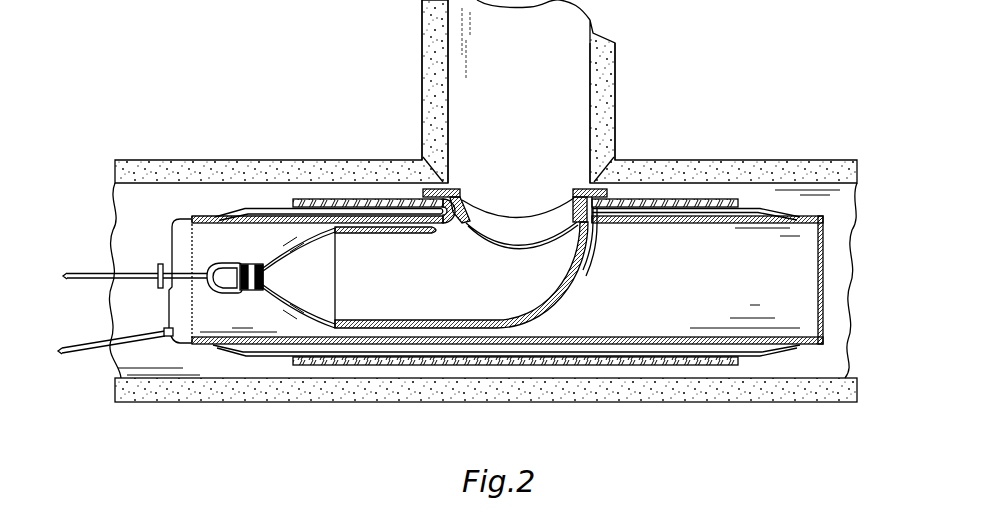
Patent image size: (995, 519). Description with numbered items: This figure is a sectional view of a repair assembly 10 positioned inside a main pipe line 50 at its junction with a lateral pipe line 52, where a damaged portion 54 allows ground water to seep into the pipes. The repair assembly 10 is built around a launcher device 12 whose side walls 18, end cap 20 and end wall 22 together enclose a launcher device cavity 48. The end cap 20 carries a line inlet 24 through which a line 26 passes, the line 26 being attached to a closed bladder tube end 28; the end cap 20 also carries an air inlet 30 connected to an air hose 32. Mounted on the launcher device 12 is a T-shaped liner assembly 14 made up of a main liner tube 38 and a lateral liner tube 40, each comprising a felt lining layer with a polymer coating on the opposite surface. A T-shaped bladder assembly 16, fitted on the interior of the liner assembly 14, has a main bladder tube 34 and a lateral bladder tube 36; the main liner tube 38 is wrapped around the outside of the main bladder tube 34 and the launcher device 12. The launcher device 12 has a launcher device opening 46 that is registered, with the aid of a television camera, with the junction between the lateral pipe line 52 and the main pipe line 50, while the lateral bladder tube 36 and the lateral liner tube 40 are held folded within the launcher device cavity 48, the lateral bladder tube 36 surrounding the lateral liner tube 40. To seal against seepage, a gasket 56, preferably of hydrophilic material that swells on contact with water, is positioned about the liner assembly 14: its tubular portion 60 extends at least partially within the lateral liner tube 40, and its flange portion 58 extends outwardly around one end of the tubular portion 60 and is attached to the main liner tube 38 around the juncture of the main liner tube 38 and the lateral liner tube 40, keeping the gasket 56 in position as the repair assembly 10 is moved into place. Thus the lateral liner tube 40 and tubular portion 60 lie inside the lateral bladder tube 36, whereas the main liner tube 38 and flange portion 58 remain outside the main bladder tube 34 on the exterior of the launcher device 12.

The repair assembly 10 is at (115, 219).
The launcher device 12 is at (166, 210).
The liner assembly 14 is at (675, 198).
The bladder assembly 16 is at (597, 278).
The side walls 18 is at (257, 219).
The end cap 20 is at (178, 305).
The end wall 22 is at (823, 240).
The line inlet 24 is at (157, 265).
The line 26 is at (118, 283).
The closed bladder tube end 28 is at (252, 261).
The air inlet 30 is at (172, 339).
The air hose 32 is at (107, 357).
The main bladder tube 34 is at (240, 205).
The lateral bladder tube 36 is at (284, 245).
The main liner tube 38 is at (387, 198).
The lateral liner tube 40 is at (415, 240).
The launcher device opening 46 is at (600, 227).
The launcher device cavity 48 is at (788, 307).
The main pipe line 50 is at (774, 160).
The lateral pipe line 52 is at (618, 100).
The damaged portion 54 is at (436, 177).
The gasket 56 is at (566, 176).
The flange portion 58 is at (578, 188).
The tubular portion 60 is at (560, 228).